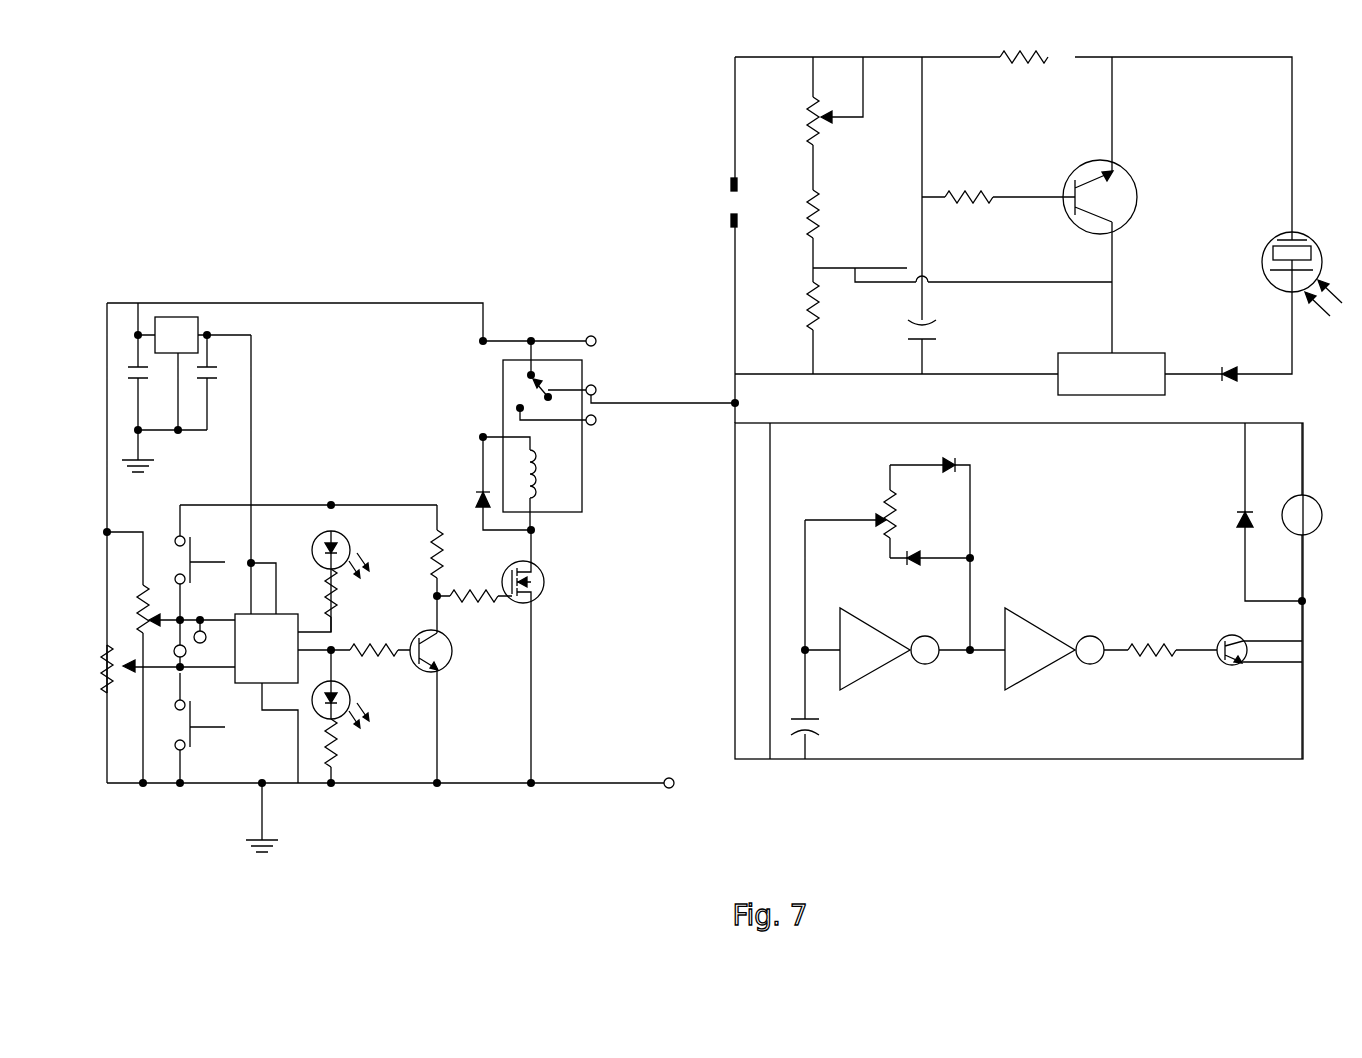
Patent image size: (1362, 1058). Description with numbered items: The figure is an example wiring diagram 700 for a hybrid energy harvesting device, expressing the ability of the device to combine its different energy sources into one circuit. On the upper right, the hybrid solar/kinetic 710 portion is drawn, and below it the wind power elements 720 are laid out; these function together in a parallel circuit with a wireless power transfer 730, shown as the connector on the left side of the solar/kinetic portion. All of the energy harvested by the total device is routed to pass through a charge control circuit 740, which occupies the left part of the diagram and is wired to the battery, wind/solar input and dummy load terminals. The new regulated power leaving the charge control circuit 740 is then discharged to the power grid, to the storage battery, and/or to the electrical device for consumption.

The wiring diagram 700 is at (467, 167).
The hybrid solar/kinetic 710 is at (950, 56).
The wind power elements 720 is at (1302, 790).
The wireless power transfer 730 is at (737, 149).
The charge control circuit 740 is at (537, 283).